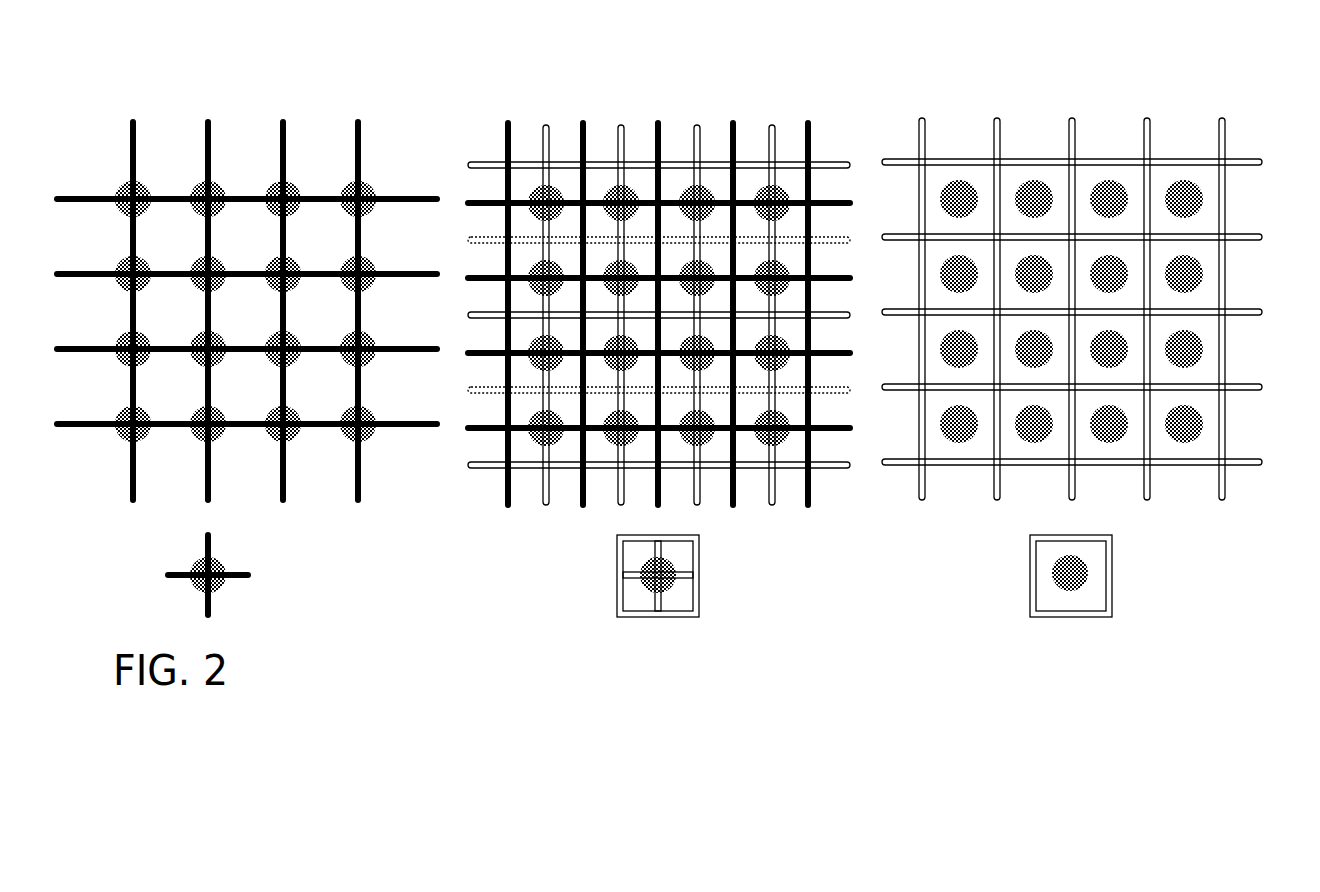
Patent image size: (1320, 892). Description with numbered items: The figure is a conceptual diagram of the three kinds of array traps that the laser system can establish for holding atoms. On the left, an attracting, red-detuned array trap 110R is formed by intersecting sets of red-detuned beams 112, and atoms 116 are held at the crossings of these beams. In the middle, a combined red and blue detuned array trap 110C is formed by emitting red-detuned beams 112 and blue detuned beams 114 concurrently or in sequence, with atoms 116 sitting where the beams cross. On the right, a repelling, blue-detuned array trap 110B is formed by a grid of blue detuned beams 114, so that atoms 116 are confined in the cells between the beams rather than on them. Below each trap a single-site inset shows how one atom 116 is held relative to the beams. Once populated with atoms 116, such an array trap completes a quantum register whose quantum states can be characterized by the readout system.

The red-detuned array trap 110R is at (408, 82).
The blue-detuned array trap 110B is at (855, 82).
The combined red and blue detuned array trap 110C is at (1238, 82).
The red-detuned beams 112 is at (285, 500).
The blue detuned beams 114 is at (510, 500).
The atoms 116 is at (298, 438).